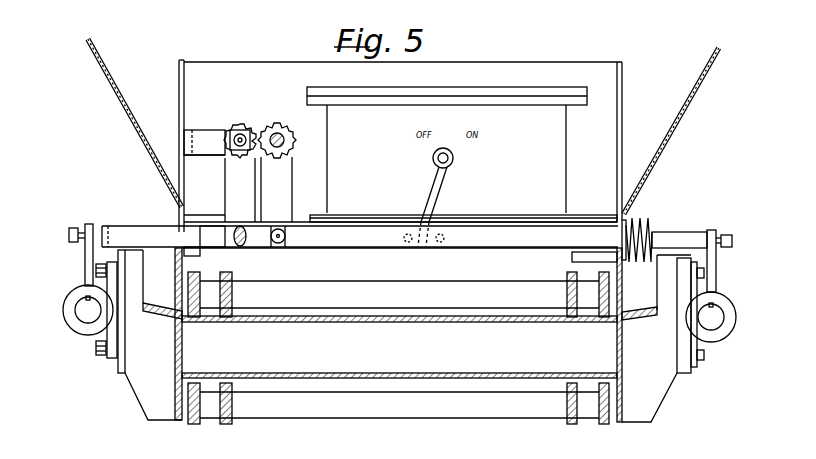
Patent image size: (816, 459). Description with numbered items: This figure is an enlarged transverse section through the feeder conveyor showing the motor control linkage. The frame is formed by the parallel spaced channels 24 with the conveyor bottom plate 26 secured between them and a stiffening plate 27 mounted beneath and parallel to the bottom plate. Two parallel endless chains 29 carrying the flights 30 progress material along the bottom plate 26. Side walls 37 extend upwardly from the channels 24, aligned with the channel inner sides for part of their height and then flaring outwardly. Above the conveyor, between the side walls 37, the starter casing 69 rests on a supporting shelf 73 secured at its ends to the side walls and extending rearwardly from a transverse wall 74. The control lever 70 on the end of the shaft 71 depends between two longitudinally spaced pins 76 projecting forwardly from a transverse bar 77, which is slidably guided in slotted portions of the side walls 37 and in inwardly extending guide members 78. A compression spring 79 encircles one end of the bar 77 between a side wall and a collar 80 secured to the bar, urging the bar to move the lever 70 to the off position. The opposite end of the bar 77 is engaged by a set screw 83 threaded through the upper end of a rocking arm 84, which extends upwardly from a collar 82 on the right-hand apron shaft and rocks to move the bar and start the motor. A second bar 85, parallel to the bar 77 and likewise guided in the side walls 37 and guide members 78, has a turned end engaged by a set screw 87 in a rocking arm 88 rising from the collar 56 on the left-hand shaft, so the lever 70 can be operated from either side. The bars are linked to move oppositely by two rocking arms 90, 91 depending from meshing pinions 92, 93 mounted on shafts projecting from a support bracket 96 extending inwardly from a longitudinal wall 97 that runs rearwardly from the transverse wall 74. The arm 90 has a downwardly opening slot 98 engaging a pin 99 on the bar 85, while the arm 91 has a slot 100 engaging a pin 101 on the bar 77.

The channel 24 is at (182, 348).
The conveyor bottom plate 26 is at (370, 324).
The plate 27 is at (462, 372).
The endless chain 29 is at (566, 278).
The flight 30 is at (452, 286).
The side wall 37 is at (128, 120).
The collar 56 is at (64, 322).
The casing 69 is at (568, 136).
The control lever 70 is at (440, 196).
The shaft 71 is at (455, 160).
The supporting shelf 73 is at (204, 194).
The transverse wall 74 is at (548, 62).
The pin 76 is at (438, 244).
The transverse bar 77 is at (690, 230).
The guide member 78 is at (186, 256).
The compression spring 79 is at (648, 218).
The collar 80 is at (650, 224).
The collar 82 is at (738, 318).
The set screw 83 is at (726, 234).
The rocking arm 84 is at (718, 270).
The bar 85 is at (128, 224).
The set screw 87 is at (75, 228).
The rocking arm 88 is at (89, 224).
The rocking arm 90 is at (238, 200).
The rocking arm 91 is at (288, 185).
The pinion 92 is at (237, 120).
The pinion 93 is at (284, 122).
The support bracket 96 is at (206, 128).
The longitudinal wall 97 is at (178, 88).
The slot 98 is at (238, 248).
The pin 99 is at (275, 246).
The slot 100 is at (286, 249).
The pin 101 is at (300, 215).